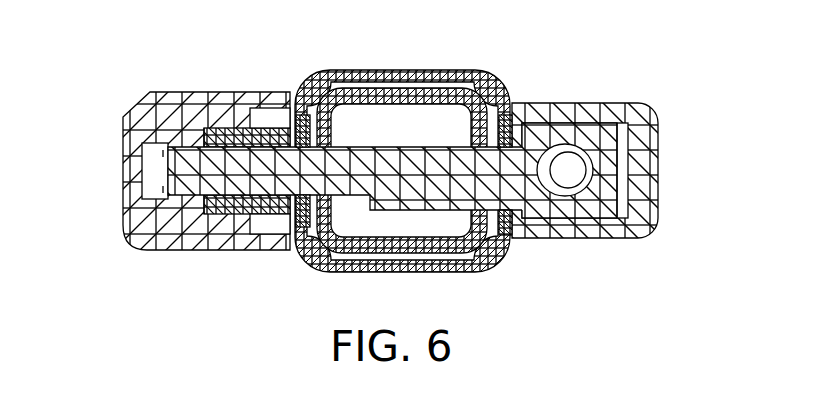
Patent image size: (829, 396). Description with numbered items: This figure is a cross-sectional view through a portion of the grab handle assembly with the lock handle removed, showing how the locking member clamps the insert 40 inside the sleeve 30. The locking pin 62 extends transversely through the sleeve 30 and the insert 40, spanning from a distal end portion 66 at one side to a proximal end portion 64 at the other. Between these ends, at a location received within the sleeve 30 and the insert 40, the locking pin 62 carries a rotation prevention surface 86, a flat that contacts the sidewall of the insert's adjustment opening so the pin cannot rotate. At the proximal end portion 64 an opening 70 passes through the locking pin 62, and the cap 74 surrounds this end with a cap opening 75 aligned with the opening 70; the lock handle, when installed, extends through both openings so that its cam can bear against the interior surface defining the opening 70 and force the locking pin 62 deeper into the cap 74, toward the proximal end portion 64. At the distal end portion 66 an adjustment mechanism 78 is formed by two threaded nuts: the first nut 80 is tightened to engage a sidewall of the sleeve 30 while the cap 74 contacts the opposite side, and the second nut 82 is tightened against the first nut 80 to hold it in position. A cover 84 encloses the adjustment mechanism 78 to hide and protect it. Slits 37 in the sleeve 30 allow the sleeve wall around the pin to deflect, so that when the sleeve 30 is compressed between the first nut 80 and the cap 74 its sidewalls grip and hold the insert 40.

The sleeve 30 is at (468, 272).
The slits 37 is at (512, 100).
The insert 40 is at (440, 90).
The locking pin 62 is at (348, 157).
The proximal end portion 64 is at (600, 208).
The distal end portion 66 is at (170, 173).
The opening 70 is at (558, 147).
The cap 74 is at (645, 103).
The cap opening 75 is at (583, 176).
The adjustment mechanism 78 is at (247, 130).
The first nut 80 is at (266, 128).
The second nut 82 is at (236, 122).
The cover 84 is at (148, 250).
The rotation prevention surface 86 is at (463, 140).